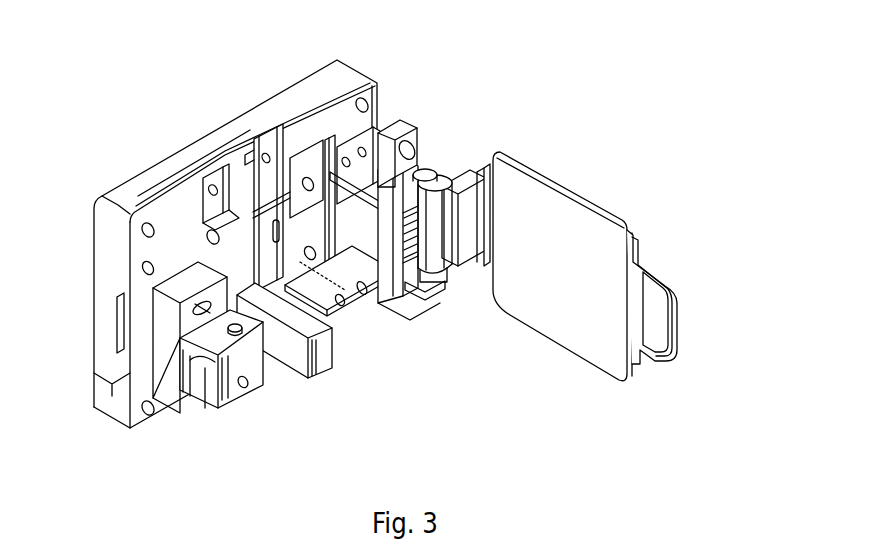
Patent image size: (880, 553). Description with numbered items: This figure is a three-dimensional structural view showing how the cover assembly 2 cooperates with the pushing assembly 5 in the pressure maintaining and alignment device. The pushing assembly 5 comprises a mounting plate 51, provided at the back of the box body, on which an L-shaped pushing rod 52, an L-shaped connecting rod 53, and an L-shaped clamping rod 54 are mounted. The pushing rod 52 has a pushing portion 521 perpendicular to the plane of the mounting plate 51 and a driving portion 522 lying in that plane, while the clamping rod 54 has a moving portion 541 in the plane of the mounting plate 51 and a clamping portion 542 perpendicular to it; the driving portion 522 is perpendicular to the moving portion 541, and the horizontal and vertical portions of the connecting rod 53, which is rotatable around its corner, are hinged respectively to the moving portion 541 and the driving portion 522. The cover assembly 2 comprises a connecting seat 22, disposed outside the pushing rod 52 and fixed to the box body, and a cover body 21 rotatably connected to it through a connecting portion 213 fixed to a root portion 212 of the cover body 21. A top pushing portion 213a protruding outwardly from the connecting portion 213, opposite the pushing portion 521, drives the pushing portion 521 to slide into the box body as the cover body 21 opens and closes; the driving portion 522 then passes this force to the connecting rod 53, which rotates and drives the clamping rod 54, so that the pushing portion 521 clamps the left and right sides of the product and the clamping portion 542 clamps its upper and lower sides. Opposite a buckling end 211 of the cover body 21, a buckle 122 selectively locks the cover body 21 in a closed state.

The cover assembly 2 is at (672, 175).
The pushing assembly 5 is at (148, 72).
The cover body 21 is at (602, 353).
The connecting seat 22 is at (390, 130).
The mounting plate 51 is at (132, 188).
The pushing rod 52 is at (427, 335).
The connecting rod 53 is at (267, 190).
The clamping rod 54 is at (303, 395).
The buckle 122 is at (208, 400).
The buckling end 211 is at (673, 340).
The root portion 212 is at (473, 168).
The connecting portion 213 is at (447, 167).
The top pushing portion 213a is at (448, 217).
The pushing portion 521 is at (428, 295).
The driving portion 522 is at (313, 257).
The moving portion 541 is at (233, 172).
The clamping portion 542 is at (325, 365).